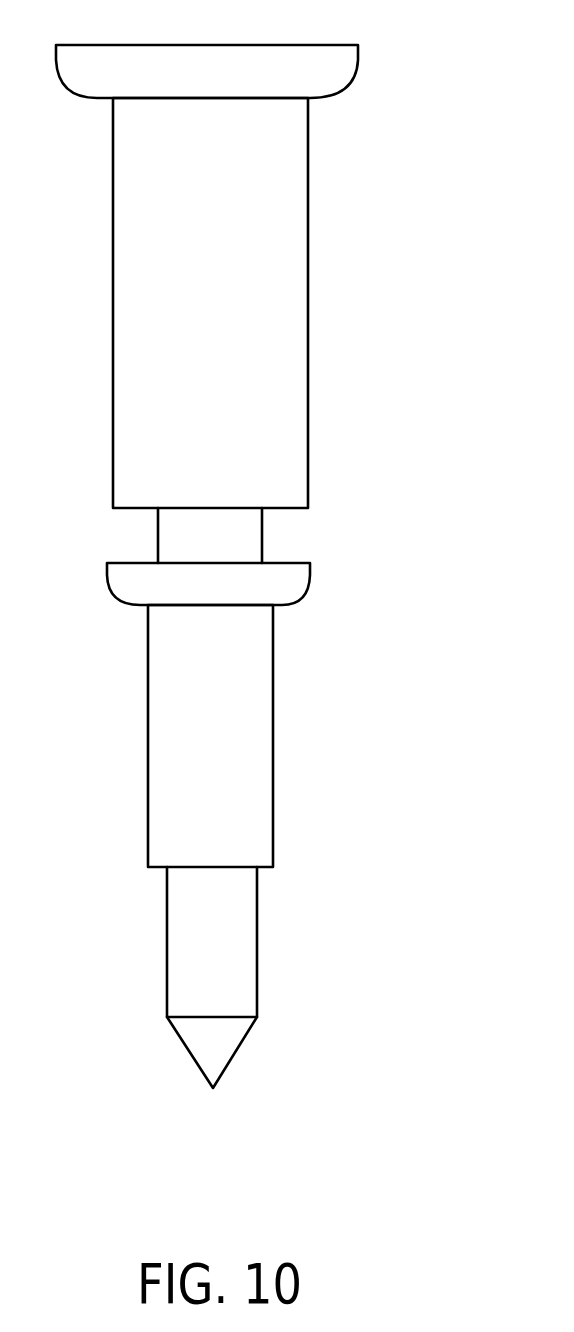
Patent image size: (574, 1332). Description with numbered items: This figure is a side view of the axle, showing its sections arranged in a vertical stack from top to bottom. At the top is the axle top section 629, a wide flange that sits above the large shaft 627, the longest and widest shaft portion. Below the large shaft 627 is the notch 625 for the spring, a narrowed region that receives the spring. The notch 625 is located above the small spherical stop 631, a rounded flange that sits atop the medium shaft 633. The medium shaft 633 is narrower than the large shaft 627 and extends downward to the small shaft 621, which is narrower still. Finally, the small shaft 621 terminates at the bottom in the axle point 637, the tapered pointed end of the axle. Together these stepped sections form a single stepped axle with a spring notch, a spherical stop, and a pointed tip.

The axle top section 629 is at (317, 60).
The large shaft 627 is at (281, 289).
The notch for the spring 625 is at (289, 536).
The small spherical stop 631 is at (282, 586).
The medium shaft 633 is at (254, 753).
The small shaft 621 is at (242, 958).
The axle point 637 is at (227, 1038).